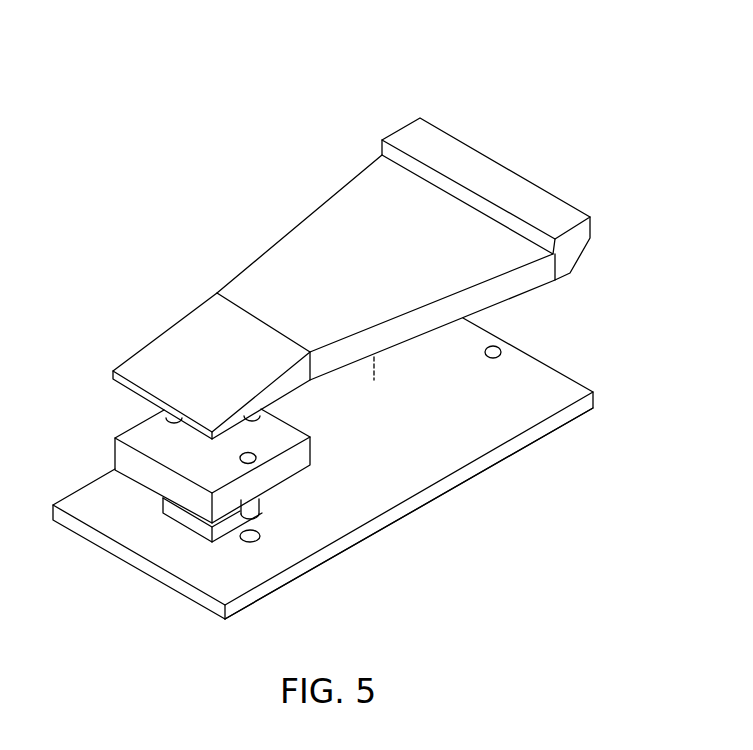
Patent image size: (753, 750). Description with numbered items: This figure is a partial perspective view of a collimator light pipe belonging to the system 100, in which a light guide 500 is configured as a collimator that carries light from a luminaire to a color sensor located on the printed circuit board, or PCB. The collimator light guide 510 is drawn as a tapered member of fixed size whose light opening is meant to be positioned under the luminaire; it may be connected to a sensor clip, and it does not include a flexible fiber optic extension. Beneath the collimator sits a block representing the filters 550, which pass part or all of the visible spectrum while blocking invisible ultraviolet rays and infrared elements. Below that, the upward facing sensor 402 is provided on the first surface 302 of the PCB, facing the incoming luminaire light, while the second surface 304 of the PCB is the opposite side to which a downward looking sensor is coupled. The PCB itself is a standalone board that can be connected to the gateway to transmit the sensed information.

The system 100 is at (152, 48).
The light guide 500 is at (181, 170).
The collimator light guide 510 is at (307, 222).
The filters 550 is at (115, 452).
The upward facing sensor 402 is at (173, 510).
The first surface 302 is at (530, 383).
The second surface 304 is at (452, 492).
The printed circuit board PCB is at (585, 407).